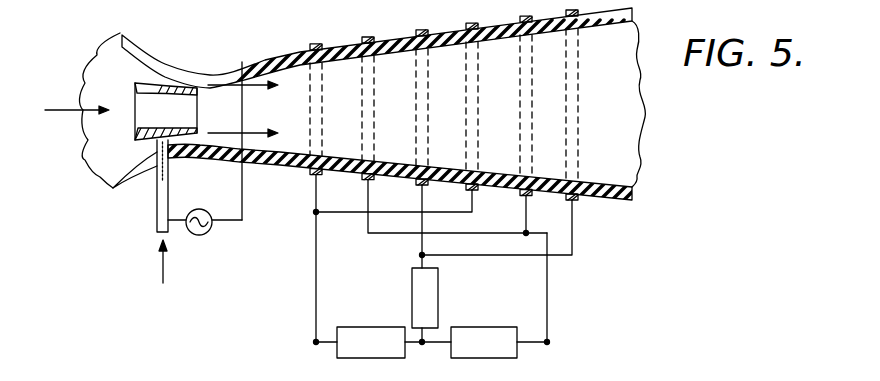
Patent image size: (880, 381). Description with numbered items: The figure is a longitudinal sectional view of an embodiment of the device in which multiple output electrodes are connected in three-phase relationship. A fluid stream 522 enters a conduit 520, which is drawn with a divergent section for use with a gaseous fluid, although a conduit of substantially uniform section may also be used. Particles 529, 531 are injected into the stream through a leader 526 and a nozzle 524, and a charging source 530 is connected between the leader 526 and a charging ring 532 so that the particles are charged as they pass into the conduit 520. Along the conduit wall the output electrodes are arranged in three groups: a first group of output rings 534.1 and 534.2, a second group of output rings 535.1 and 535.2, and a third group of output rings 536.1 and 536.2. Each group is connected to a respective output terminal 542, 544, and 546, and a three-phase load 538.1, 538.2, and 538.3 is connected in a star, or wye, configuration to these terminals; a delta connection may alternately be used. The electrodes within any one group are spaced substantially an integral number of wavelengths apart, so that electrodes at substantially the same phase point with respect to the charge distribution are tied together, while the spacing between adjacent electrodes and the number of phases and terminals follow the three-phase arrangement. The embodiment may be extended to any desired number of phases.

The conduit 520 is at (640, 188).
The fluid stream 522 is at (64, 109).
The nozzle 524 is at (150, 81).
The leader 526 is at (157, 208).
The particles 529 is at (165, 258).
The charging source 530 is at (208, 231).
The particles 531 is at (228, 98).
The charging ring 532 is at (242, 62).
The output ring 534.1 is at (312, 176).
The output ring 535.1 is at (371, 176).
The output ring 536.1 is at (417, 185).
The output ring 534.2 is at (478, 194).
The output ring 535.2 is at (532, 199).
The output ring 536.2 is at (577, 204).
The three-phase load 538.1 is at (373, 327).
The three-phase load 538.2 is at (494, 352).
The three-phase load 538.3 is at (435, 298).
The output terminal 542 is at (315, 341).
The output terminal 544 is at (549, 340).
The output terminal 546 is at (425, 257).